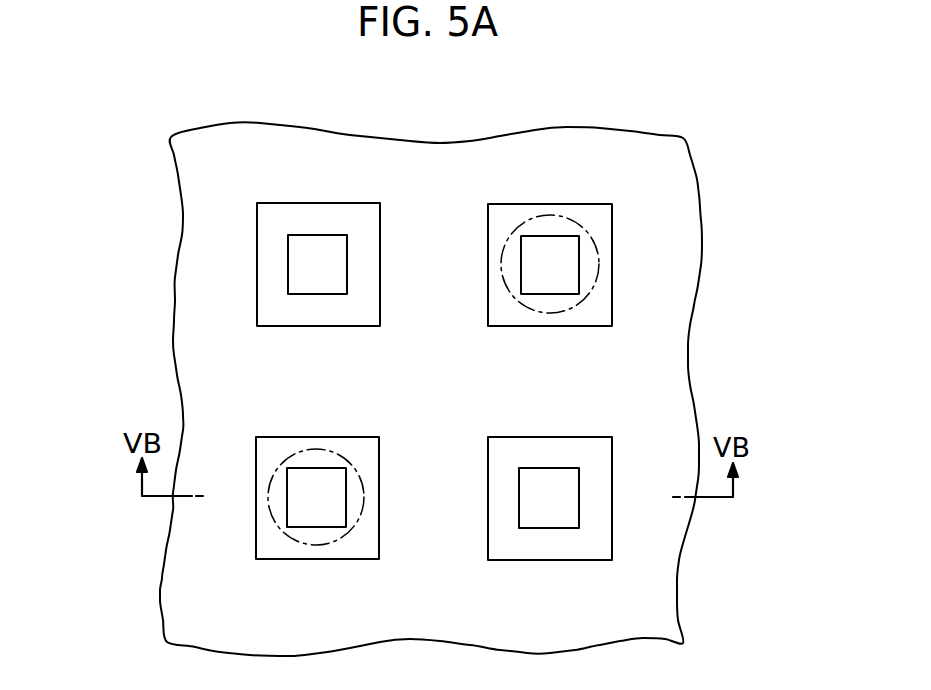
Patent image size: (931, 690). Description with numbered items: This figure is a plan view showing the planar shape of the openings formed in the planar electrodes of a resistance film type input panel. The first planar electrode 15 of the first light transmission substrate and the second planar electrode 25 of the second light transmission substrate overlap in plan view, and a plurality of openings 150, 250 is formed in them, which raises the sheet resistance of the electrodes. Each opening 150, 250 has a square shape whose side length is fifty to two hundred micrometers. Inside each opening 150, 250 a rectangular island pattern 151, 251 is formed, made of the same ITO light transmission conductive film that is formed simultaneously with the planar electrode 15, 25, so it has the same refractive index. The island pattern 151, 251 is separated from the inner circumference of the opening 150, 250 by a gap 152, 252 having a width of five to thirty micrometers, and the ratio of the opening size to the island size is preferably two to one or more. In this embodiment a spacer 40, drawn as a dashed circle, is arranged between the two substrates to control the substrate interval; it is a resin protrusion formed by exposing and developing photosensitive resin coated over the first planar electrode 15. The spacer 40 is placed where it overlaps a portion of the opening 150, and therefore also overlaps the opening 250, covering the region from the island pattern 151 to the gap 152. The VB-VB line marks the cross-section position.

The first planar electrode 15 is at (488, 389).
The second planar electrode 25 is at (688, 266).
The opening 150 is at (434, 359).
The opening 250 is at (380, 210).
The island pattern 151 is at (433, 431).
The island pattern 251 is at (311, 287).
The gap 152 is at (312, 541).
The gap 252 is at (313, 535).
The spacer 40 is at (563, 221).